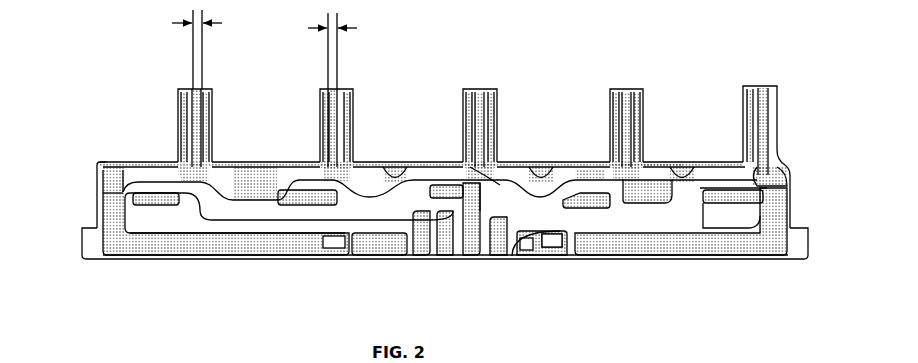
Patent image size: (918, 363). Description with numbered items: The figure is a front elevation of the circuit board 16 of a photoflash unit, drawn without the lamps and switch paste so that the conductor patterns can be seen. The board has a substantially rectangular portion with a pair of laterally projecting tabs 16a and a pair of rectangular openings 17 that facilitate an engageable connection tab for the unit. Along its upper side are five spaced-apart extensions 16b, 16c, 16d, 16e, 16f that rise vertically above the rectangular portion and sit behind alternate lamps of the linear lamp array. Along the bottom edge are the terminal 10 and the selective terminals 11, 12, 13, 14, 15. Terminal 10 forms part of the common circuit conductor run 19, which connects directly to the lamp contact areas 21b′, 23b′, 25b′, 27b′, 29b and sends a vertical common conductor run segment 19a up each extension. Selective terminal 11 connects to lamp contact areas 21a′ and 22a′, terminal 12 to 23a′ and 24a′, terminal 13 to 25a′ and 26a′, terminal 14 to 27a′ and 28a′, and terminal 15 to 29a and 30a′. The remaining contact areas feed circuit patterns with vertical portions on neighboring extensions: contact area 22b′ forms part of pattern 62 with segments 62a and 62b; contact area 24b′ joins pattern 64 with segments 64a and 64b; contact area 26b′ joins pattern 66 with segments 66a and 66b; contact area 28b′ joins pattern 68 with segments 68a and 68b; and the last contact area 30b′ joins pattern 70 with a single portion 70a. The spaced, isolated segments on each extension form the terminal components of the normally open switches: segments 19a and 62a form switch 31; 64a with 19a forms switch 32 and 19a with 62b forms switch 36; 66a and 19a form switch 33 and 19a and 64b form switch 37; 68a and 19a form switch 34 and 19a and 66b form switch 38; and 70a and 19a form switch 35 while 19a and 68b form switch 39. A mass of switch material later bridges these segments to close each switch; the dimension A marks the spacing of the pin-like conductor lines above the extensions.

The terminal 10 is at (380, 250).
The selective terminal 11 is at (527, 250).
The selective terminal 12 is at (499, 253).
The selective terminal 13 is at (471, 253).
The selective terminal 14 is at (446, 253).
The selective terminal 15 is at (422, 253).
The circuit board 16 is at (97, 203).
The laterally projecting tabs 16a is at (82, 242).
The circuit board extension 16b is at (778, 124).
The circuit board extension 16c is at (644, 121).
The circuit board extension 16d is at (498, 121).
The circuit board extension 16e is at (353, 121).
The circuit board extension 16f is at (212, 121).
The rectangular openings 17 is at (333, 248).
The common circuit conductor run 19 is at (128, 248).
The common conductor run segment 19a is at (196, 108).
The lamp contact area 21a′ is at (762, 195).
The lamp contact area 21b′ is at (785, 166).
The lamp contact area 22a′ is at (733, 209).
The lamp contact area 22b′ is at (690, 170).
The lamp contact area 23a′ is at (592, 203).
The lamp contact area 23b′ is at (665, 204).
The lamp contact area 24a′ is at (600, 160).
The lamp contact area 24b′ is at (540, 170).
The lamp contact area 25a′ is at (480, 175).
The lamp contact area 25b′ is at (565, 253).
The lamp contact area 26a′ is at (445, 185).
The lamp contact area 26b′ is at (405, 162).
The lamp contact area 27a′ is at (318, 205).
The lamp contact area 27b′ is at (365, 195).
The lamp contact area 28a′ is at (292, 195).
The lamp contact area 28b′ is at (262, 160).
The lamp contact area 29a is at (172, 198).
The lamp contact area 29b is at (222, 192).
The lamp contact area 30a′ is at (123, 192).
The lamp contact area 30b′ is at (108, 170).
The connect switch 31 is at (760, 85).
The connect switch 32 is at (613, 88).
The connect switch 33 is at (466, 88).
The connect switch 34 is at (322, 88).
The connect switch 35 is at (178, 88).
The connect switch 36 is at (637, 88).
The connect switch 37 is at (492, 88).
The connect switch 38 is at (348, 88).
The connect switch 39 is at (205, 88).
The conductive circuit pattern 62 is at (712, 166).
The vertically extending segment 62a is at (749, 106).
The vertically extending segment 62b is at (640, 141).
The circuit pattern 64 is at (568, 168).
The vertically extending segment 64a is at (614, 106).
The vertically extending segment 64b is at (494, 141).
The circuit pattern 66 is at (422, 168).
The vertically extending segment 66a is at (468, 106).
The vertically extending segment 66b is at (350, 141).
The circuit pattern 68 is at (276, 168).
The vertically extending segment 68a is at (325, 106).
The vertically extending segment 68b is at (209, 141).
The circuit pattern 70 is at (170, 167).
The vertically extending portion 70a is at (183, 106).
The pin spacing dimension A is at (270, 25).